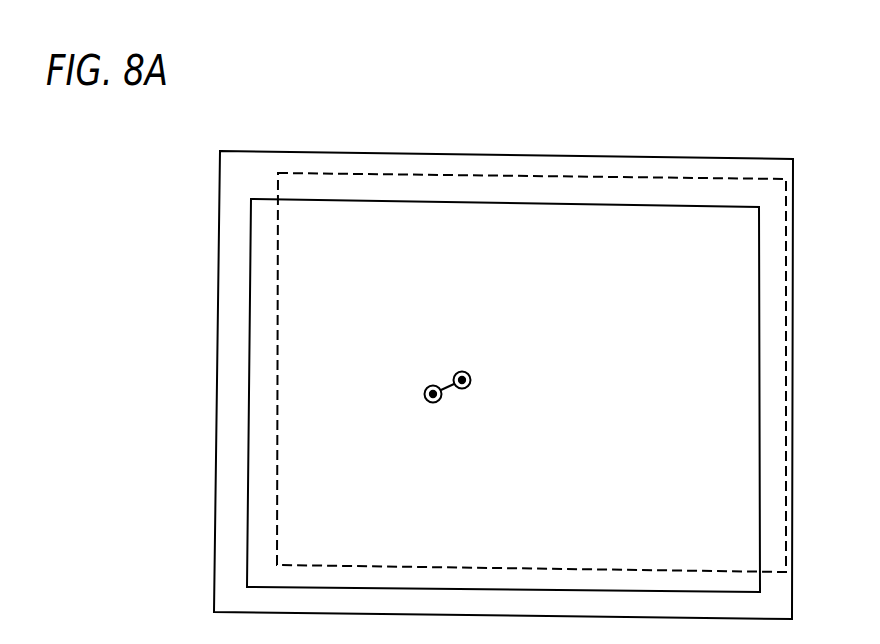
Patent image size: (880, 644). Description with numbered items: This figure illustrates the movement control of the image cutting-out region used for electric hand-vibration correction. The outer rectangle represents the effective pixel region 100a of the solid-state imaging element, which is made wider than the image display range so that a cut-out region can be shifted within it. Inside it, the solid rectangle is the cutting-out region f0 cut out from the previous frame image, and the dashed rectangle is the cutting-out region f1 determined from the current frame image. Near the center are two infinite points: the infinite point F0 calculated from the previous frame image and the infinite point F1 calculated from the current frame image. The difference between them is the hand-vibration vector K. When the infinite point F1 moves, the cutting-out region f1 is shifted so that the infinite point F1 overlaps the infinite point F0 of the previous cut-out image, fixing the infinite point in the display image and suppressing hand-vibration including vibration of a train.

The effective pixel region 100a is at (265, 151).
The cutting-out region f0 is at (249, 414).
The cutting-out region f1 is at (571, 568).
The infinite point F0 is at (427, 387).
The infinite point F1 is at (466, 372).
The hand-vibration vector K is at (445, 400).